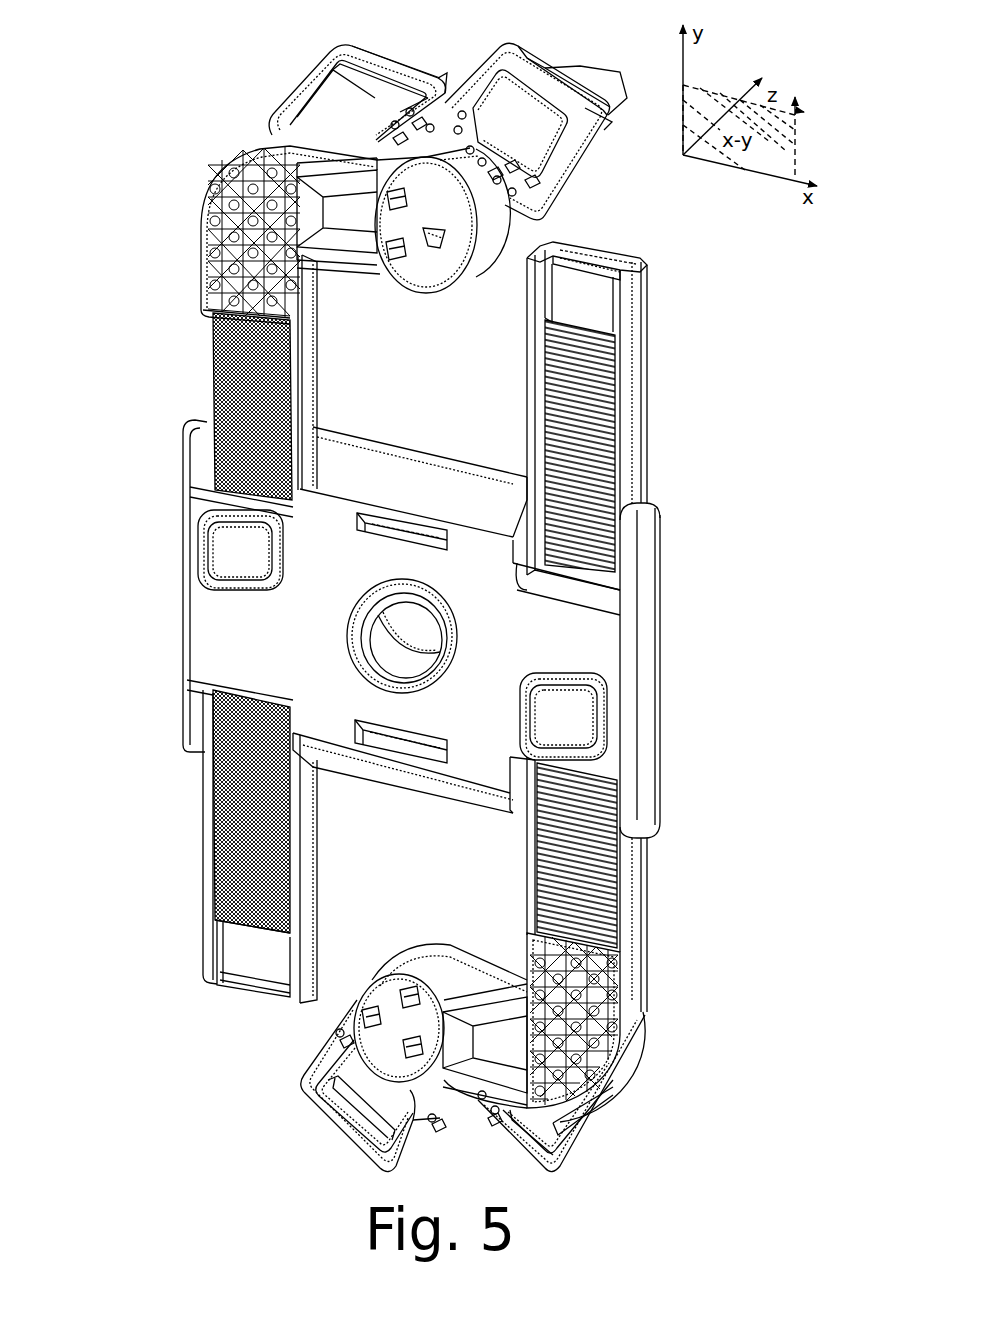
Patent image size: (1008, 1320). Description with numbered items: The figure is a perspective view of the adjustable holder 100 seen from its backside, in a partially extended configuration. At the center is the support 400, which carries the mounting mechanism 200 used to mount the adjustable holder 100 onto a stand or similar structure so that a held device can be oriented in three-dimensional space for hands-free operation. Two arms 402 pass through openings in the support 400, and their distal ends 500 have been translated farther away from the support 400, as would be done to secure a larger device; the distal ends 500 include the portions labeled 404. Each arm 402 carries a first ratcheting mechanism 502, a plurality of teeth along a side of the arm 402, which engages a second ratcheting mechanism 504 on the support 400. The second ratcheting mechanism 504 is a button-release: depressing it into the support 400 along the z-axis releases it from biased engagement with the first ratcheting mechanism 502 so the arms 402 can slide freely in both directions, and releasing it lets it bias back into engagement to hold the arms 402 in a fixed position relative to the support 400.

The adjustable holder 100 is at (205, 66).
The mounting mechanism 200 is at (350, 643).
The support 400 is at (650, 690).
The arm 402 is at (205, 856).
The arm 404 is at (303, 1095).
The distal end 500 is at (203, 189).
The first ratcheting mechanism 502 is at (238, 401).
The second ratcheting mechanism 504 is at (228, 556).